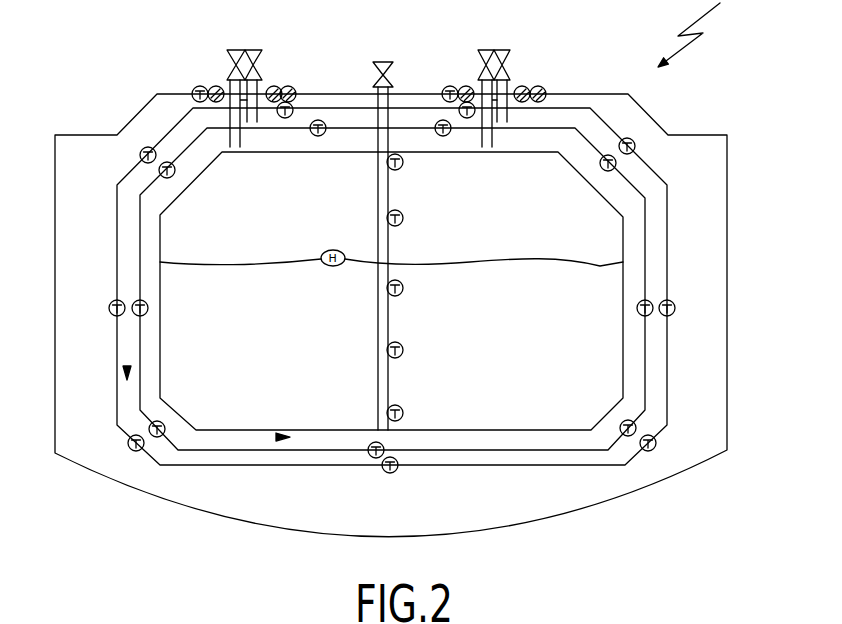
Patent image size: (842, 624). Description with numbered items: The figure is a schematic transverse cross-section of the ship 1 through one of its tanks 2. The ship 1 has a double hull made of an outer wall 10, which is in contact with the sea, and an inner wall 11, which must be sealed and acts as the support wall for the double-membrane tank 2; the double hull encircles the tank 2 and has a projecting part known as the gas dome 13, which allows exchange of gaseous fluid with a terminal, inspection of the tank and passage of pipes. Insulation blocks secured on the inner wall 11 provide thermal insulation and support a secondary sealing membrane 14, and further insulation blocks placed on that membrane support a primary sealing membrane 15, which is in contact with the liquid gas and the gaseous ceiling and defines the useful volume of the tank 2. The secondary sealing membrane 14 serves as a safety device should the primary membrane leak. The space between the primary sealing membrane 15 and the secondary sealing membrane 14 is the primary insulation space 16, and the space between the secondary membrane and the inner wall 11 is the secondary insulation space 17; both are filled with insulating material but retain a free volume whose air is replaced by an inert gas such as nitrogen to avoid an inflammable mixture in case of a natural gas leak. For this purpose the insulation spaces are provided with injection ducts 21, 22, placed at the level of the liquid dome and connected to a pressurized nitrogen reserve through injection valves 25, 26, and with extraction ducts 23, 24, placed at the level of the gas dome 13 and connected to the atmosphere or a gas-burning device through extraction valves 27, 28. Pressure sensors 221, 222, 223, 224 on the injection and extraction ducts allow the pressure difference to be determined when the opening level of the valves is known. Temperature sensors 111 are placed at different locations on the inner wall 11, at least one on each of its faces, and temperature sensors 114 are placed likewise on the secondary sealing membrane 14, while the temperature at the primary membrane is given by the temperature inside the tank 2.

The ship 1 is at (697, 33).
The tank 2 is at (288, 246).
The outer wall 10 is at (730, 372).
The inner wall 11 is at (202, 467).
The gas dome 13 is at (683, 596).
The secondary sealing membrane 14 is at (458, 453).
The primary sealing membrane 15 is at (505, 428).
The primary insulation space 16 is at (278, 445).
The secondary insulation space 17 is at (127, 368).
The injection duct 21 is at (234, 148).
The injection duct 22 is at (252, 124).
The extraction duct 23 is at (487, 148).
The extraction duct 24 is at (503, 124).
The injection valve 25 is at (234, 49).
The injection valve 26 is at (253, 49).
The extraction valve 27 is at (486, 49).
The extraction valve 28 is at (503, 49).
The temperature sensor 111 is at (288, 101).
The temperature sensor 114 is at (318, 136).
The pressure sensor 221 is at (216, 85).
The pressure sensor 222 is at (275, 85).
The pressure sensor 223 is at (466, 85).
The pressure sensor 224 is at (524, 85).